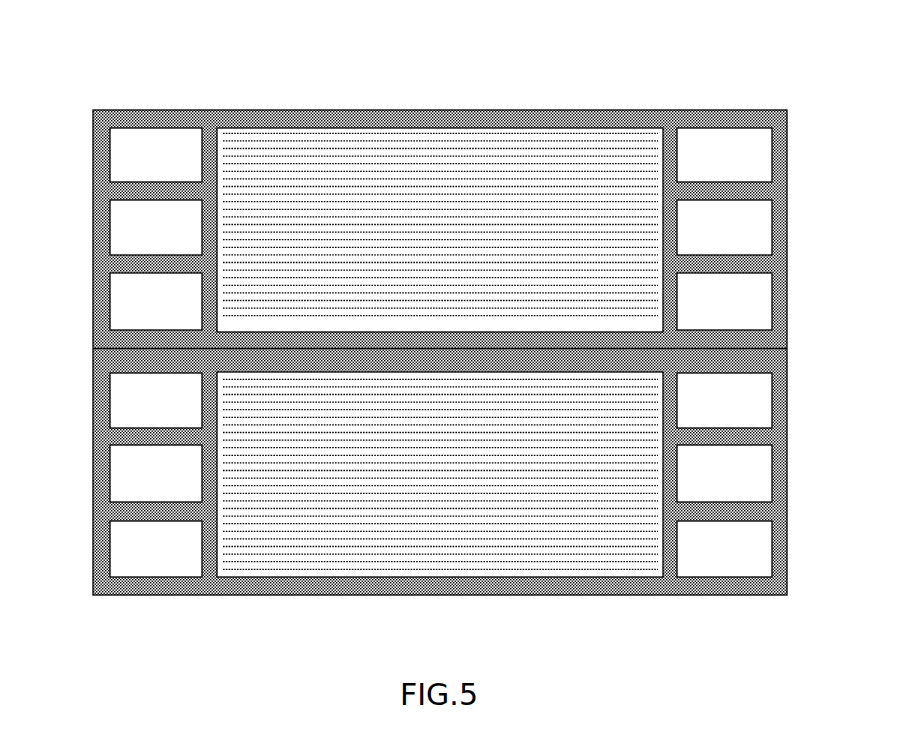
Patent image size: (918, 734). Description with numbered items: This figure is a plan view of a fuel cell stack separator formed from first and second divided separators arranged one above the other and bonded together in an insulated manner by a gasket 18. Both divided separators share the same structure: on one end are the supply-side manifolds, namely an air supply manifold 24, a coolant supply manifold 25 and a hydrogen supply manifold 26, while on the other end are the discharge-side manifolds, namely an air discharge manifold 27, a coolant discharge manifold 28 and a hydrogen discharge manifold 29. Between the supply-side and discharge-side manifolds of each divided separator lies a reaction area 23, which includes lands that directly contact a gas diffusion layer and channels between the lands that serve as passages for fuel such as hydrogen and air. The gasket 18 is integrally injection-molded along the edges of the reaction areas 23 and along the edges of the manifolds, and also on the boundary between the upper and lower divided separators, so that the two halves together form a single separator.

The gasket 18 is at (787, 349).
The reaction area 23 is at (418, 147).
The air supply manifold 24 is at (130, 152).
The coolant supply manifold 25 is at (130, 225).
The hydrogen supply manifold 26 is at (130, 299).
The air discharge manifold 27 is at (748, 305).
The coolant discharge manifold 28 is at (748, 233).
The hydrogen discharge manifold 29 is at (748, 157).